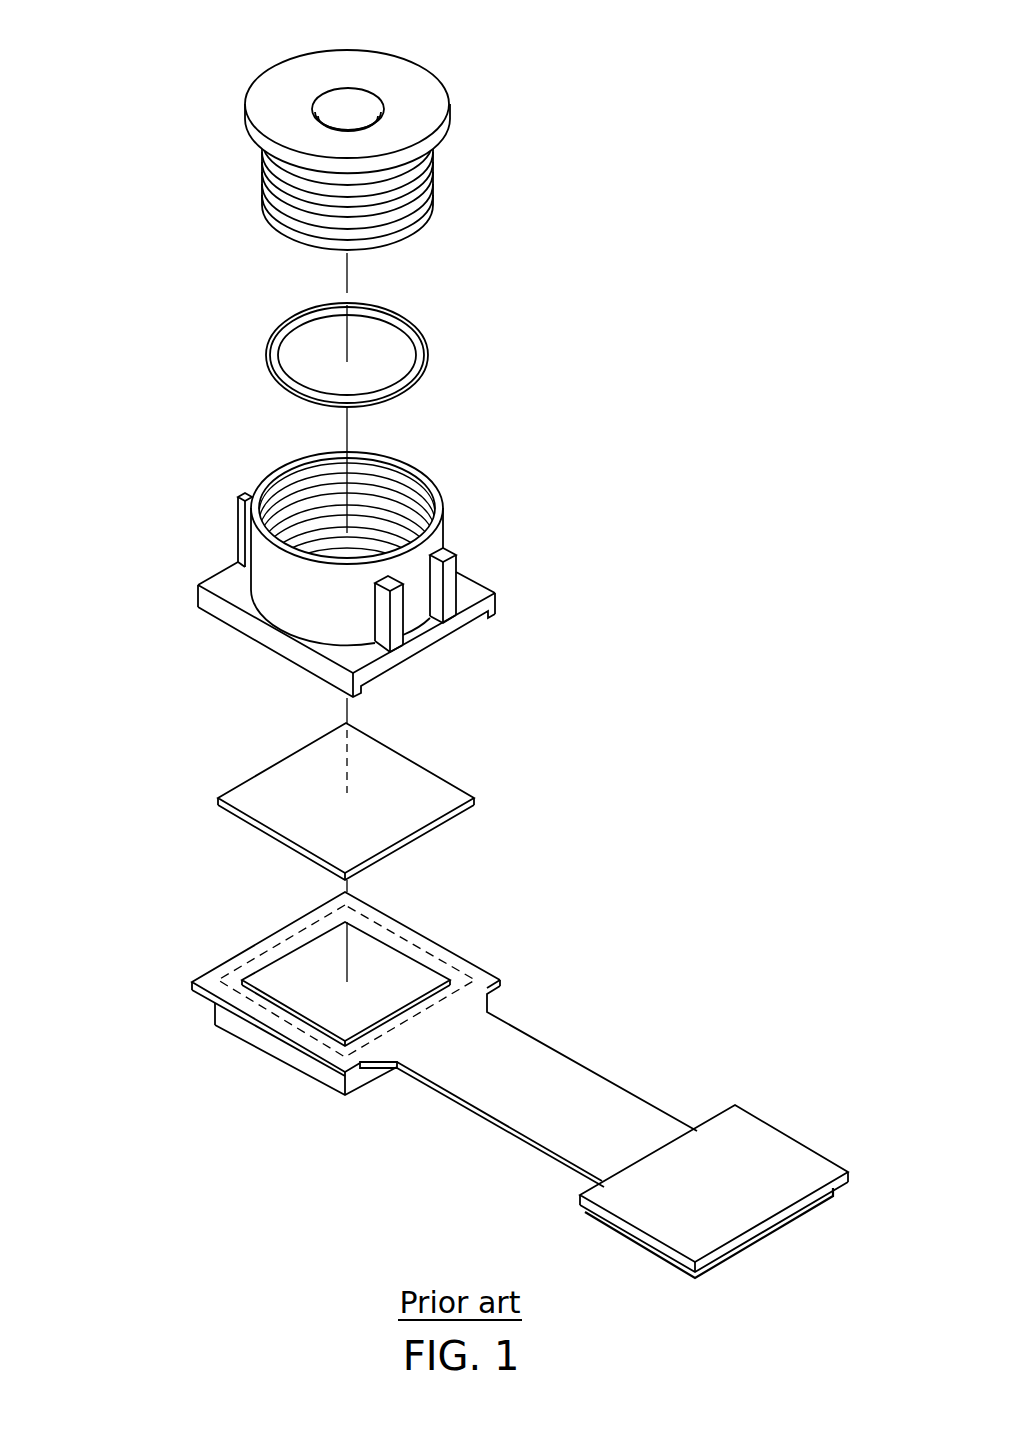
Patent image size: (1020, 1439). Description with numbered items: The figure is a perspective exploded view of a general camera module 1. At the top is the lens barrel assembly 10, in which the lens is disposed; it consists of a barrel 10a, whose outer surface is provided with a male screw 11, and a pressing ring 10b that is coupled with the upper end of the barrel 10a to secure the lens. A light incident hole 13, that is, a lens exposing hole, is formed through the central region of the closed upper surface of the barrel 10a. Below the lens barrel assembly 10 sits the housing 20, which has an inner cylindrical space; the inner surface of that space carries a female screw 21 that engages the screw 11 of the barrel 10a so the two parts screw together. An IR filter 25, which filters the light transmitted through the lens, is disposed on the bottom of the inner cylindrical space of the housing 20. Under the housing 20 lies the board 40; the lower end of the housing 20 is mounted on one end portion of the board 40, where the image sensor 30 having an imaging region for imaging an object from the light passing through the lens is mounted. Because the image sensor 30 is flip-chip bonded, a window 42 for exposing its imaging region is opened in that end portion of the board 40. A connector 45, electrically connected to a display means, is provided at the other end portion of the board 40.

The camera module 1 is at (633, 394).
The lens barrel assembly 10 is at (139, 215).
The barrel 10a is at (263, 206).
The pressing ring 10b is at (267, 351).
The male screw 11 is at (425, 205).
The light incident hole 13 is at (370, 97).
The housing 20 is at (420, 565).
The female screw 21 is at (418, 490).
The IR filter 25 is at (432, 788).
The image sensor 30 is at (295, 1053).
The board 40 is at (555, 1065).
The window 42 is at (418, 967).
The connector 45 is at (750, 1138).